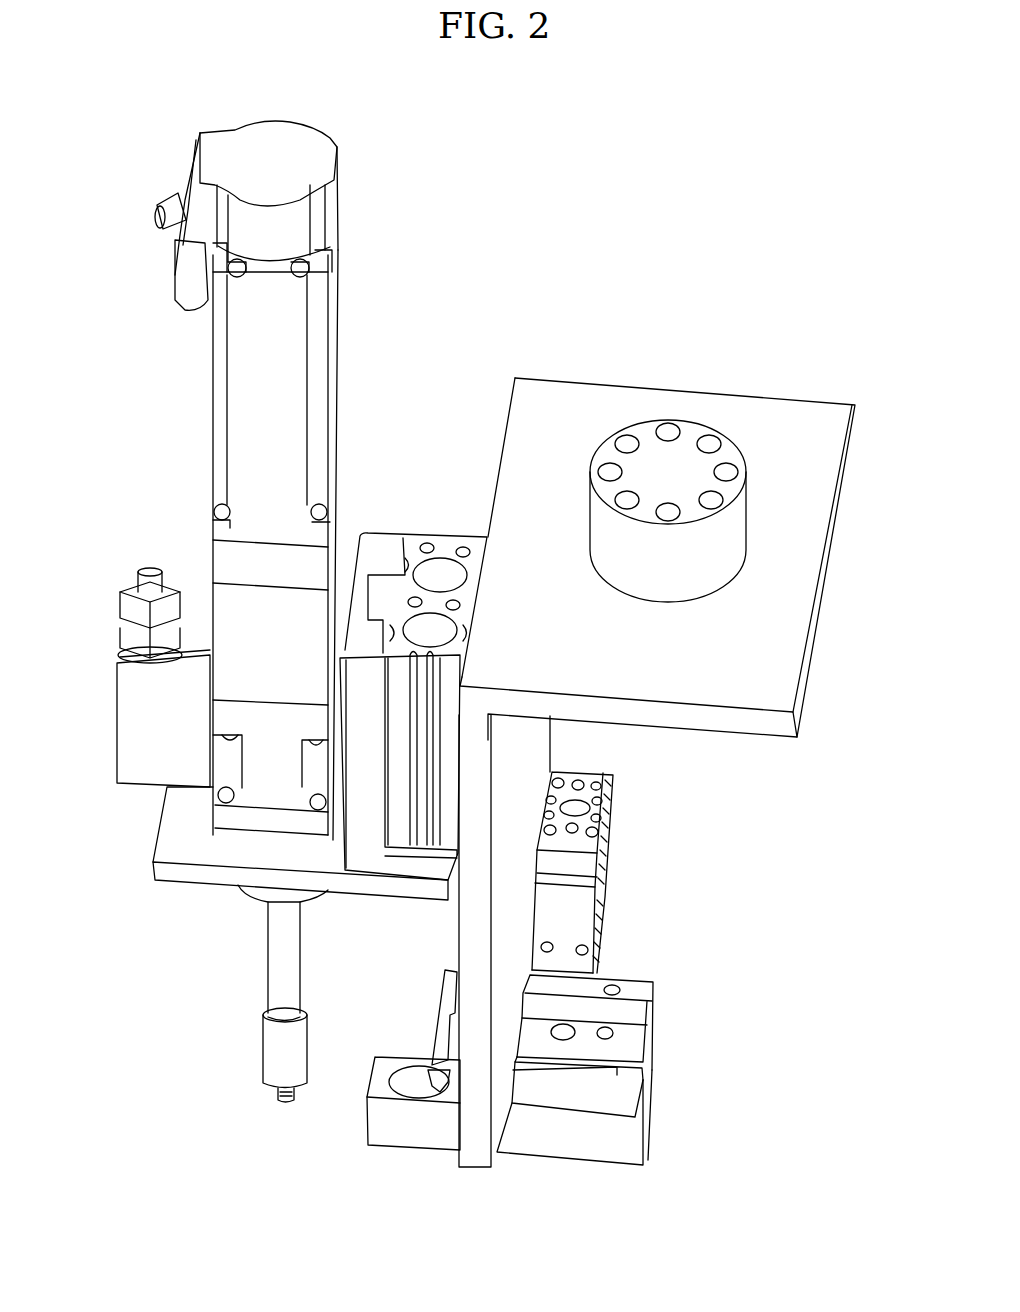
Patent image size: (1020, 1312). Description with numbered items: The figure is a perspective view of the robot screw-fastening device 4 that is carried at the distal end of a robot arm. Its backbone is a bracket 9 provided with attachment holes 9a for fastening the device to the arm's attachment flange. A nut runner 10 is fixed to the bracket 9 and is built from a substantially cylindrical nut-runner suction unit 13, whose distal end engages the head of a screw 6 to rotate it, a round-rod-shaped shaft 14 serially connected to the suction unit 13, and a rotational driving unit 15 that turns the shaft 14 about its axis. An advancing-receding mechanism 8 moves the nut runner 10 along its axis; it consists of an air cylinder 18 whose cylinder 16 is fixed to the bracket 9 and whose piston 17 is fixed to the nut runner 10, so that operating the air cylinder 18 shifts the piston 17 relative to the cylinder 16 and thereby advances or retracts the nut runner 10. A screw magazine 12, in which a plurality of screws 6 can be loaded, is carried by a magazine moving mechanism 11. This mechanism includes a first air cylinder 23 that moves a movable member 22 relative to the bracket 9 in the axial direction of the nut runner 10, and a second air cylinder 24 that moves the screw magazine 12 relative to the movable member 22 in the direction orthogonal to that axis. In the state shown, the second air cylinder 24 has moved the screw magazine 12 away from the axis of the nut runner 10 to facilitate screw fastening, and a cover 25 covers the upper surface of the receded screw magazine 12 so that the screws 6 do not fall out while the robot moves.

The robot screw-fastening device 4 is at (575, 209).
The screw 6 is at (278, 1096).
The advancing-receding mechanism 8 is at (425, 448).
The bracket 9 is at (798, 437).
The attachment holes 9a is at (712, 437).
The nut runner 10 is at (170, 529).
The magazine moving mechanism 11 is at (688, 925).
The screw magazine 12 is at (518, 1137).
The nut-runner suction unit 13 is at (263, 1047).
The shaft 14 is at (268, 961).
The rotational driving unit 15 is at (338, 270).
The cylinder 16 is at (436, 545).
The piston 17 is at (365, 850).
The air cylinder 18 is at (383, 528).
The movable member 22 is at (578, 912).
The first air cylinder 23 is at (612, 825).
The second air cylinder 24 is at (660, 996).
The cover 25 is at (627, 1098).